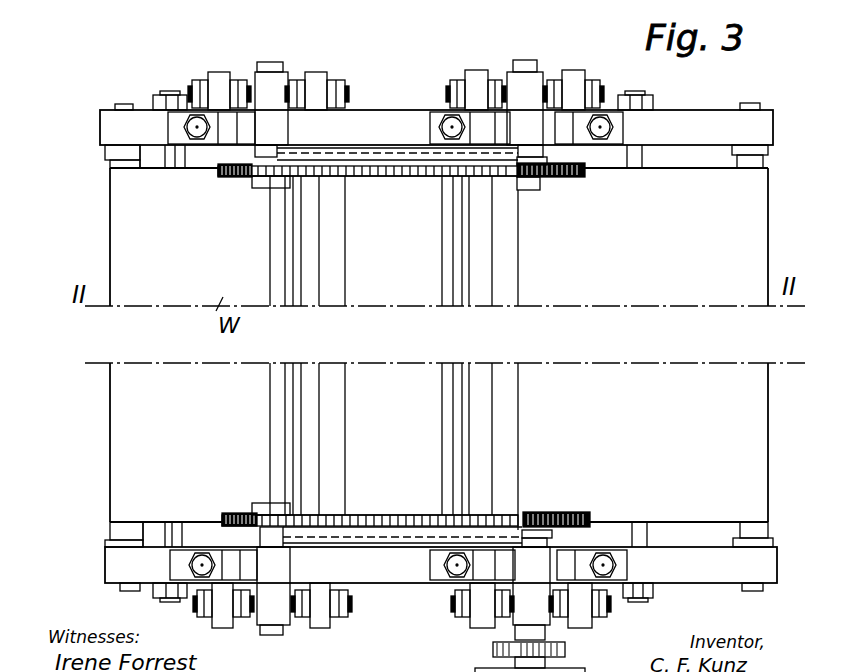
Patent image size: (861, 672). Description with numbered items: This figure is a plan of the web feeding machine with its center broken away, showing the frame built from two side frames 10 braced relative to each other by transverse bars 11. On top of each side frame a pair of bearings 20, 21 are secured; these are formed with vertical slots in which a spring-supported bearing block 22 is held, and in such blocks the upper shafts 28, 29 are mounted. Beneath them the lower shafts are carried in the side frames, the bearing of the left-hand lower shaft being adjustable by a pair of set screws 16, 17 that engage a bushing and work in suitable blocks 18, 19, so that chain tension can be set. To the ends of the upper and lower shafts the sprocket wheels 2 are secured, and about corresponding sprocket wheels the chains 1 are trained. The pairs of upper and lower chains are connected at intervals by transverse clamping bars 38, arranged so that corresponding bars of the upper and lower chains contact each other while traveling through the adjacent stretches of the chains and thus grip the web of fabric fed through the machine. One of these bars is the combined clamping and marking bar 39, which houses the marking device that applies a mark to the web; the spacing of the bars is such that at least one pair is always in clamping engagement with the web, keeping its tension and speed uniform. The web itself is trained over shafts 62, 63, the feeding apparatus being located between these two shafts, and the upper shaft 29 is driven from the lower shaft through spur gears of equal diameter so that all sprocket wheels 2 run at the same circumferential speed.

The chains 1 is at (363, 165).
The sprocket wheels 2 is at (570, 176).
The side frames 10 is at (128, 122).
The transverse bars 11 is at (178, 166).
The set screw 16 is at (205, 77).
The set screw 17 is at (342, 90).
The block 18 is at (223, 78).
The block 19 is at (317, 78).
The bearing 20 is at (227, 133).
The bearing 21 is at (577, 125).
The bearing block 22 is at (268, 92).
The upper shaft 28 is at (268, 160).
The upper shaft 29 is at (528, 165).
The transverse clamping bars 38 is at (312, 240).
The combined clamping and marking bar 39 is at (335, 260).
The shaft 62 is at (757, 160).
The shaft 63 is at (128, 163).